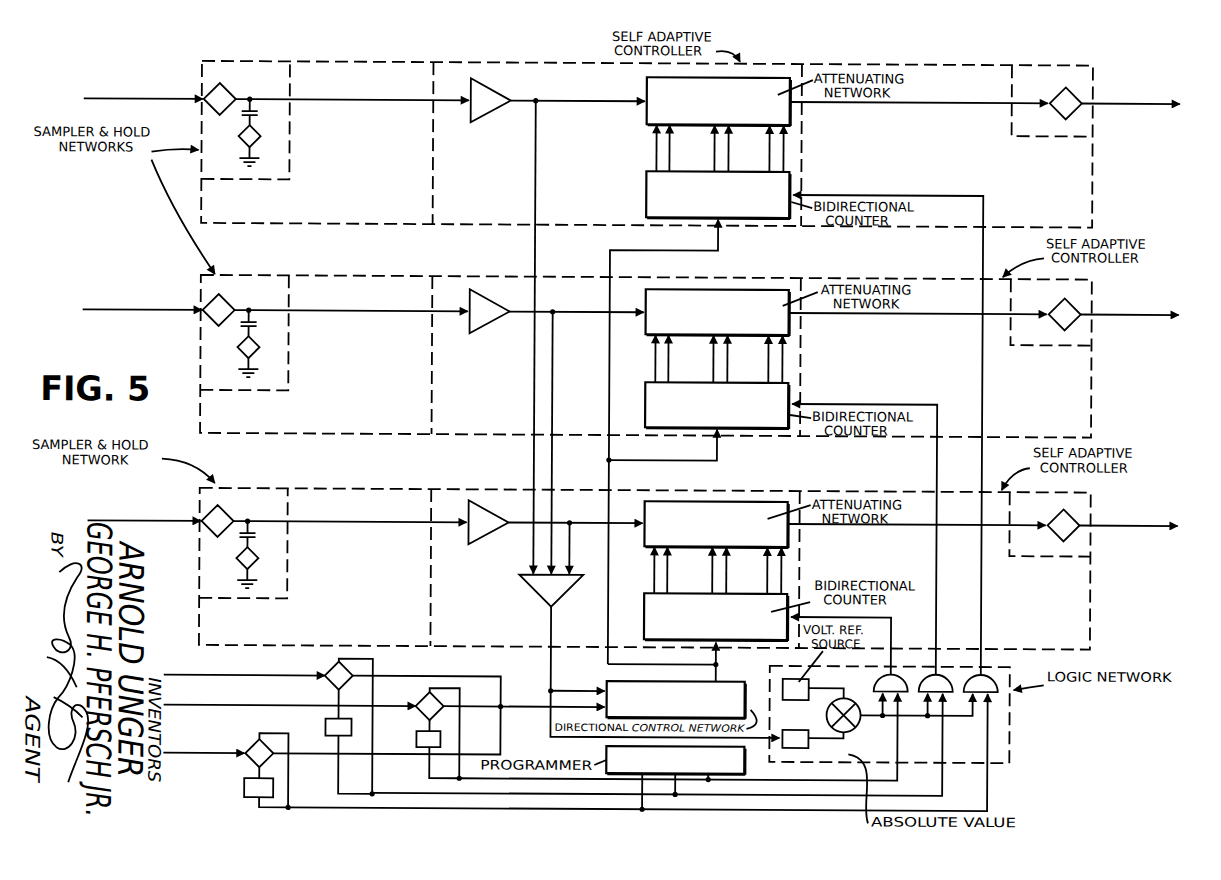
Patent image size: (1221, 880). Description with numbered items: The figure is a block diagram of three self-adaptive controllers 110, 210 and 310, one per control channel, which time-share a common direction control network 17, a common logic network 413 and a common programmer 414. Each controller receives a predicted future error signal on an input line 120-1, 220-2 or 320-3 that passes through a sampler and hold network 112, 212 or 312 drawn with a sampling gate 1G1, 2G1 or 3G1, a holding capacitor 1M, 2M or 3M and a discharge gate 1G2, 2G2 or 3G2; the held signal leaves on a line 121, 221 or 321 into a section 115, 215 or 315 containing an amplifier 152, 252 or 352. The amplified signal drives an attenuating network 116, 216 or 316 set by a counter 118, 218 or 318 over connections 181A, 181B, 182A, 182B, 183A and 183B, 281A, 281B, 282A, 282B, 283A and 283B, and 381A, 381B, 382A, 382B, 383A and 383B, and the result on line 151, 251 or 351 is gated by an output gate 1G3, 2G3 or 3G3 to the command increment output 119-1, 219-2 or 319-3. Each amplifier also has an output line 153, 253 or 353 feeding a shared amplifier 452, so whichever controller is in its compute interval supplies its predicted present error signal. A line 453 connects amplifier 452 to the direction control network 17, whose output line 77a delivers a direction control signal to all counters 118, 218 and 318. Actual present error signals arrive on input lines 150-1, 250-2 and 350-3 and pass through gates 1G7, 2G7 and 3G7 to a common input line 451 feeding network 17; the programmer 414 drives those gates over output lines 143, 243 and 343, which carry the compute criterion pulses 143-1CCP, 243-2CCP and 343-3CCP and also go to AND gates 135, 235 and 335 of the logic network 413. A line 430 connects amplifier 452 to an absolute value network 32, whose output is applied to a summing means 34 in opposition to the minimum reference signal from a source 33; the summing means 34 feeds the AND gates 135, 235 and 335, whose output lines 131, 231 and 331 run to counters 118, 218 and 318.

The self-adaptive controller 110 is at (874, 62).
The sampler and hold network 112 is at (236, 185).
The controller input section 115 is at (429, 150).
The attenuating network 116 is at (733, 118).
The counter 118 is at (733, 212).
The output signal 119-1 is at (1163, 121).
The input line 120-1 is at (120, 99).
The sampler output line 121 is at (328, 99).
The output line 131 is at (876, 193).
The AND gate 135 is at (988, 668).
The programmer output line 143 is at (337, 760).
The compute criterion pulse line 143-1CCP is at (745, 808).
The input line 150-1 is at (256, 676).
The attenuator output line 151 is at (921, 106).
The amplifier 152 is at (491, 121).
The amplifier output line 153 is at (536, 116).
The direction control network 17 is at (737, 709).
The counter output line 181A is at (652, 140).
The counter output line 181B is at (668, 143).
The counter output line 182A is at (712, 160).
The counter output line 182B is at (728, 160).
The counter output line 183A is at (767, 142).
The counter output line 183B is at (783, 143).
The gate 1G1 is at (226, 93).
The gate 1G2 is at (259, 139).
The gate 1G3 is at (1074, 96).
The gate 1G7 is at (330, 670).
The holding capacitor 1M is at (262, 114).
The self-adaptive controller 210 is at (856, 276).
The sampler and hold network 212 is at (236, 396).
The controller input section 215 is at (429, 360).
The attenuating network 216 is at (733, 329).
The counter 218 is at (733, 422).
The output signal 219-2 is at (1163, 332).
The input line 220-2 is at (154, 310).
The sampler output line 221 is at (328, 310).
The output line 231 is at (856, 403).
The AND gate 235 is at (942, 668).
The programmer output line 243 is at (424, 756).
The compute criterion pulse line 243-2CCP is at (745, 793).
The input line 250-2 is at (262, 706).
The attenuator output line 251 is at (918, 317).
The amplifier 252 is at (491, 332).
The amplifier output line 253 is at (556, 318).
The counter output line 281A is at (652, 354).
The counter output line 281B is at (668, 357).
The counter output line 282A is at (712, 374).
The counter output line 282B is at (728, 374).
The counter output line 283A is at (767, 356).
The counter output line 283B is at (783, 357).
The gate 2G1 is at (226, 304).
The gate 2G2 is at (259, 350).
The gate 2G3 is at (1074, 307).
The gate 2G7 is at (423, 700).
The holding capacitor 2M is at (262, 325).
The self-adaptive controller 310 is at (822, 489).
The sampler and hold network 312 is at (236, 604).
The controller input section 315 is at (429, 577).
The attenuating network 316 is at (733, 541).
The counter 318 is at (733, 635).
The output signal 319-3 is at (1163, 543).
The input line 320-3 is at (150, 521).
The sampler output line 321 is at (328, 521).
The output line 331 is at (869, 616).
The AND gate 335 is at (892, 668).
The programmer output line 343 is at (250, 801).
The compute criterion pulse line 343-3CCP is at (745, 778).
The input line 350-3 is at (240, 749).
The attenuator output line 351 is at (899, 528).
The amplifier 352 is at (491, 543).
The amplifier output line 353 is at (571, 529).
The counter output line 381A is at (652, 567).
The counter output line 381B is at (668, 570).
The counter output line 382A is at (712, 586).
The counter output line 382B is at (728, 586).
The counter output line 383A is at (767, 569).
The counter output line 383B is at (783, 570).
The gate 3G1 is at (226, 515).
The gate 3G2 is at (259, 561).
The gate 3G3 is at (1074, 518).
The gate 3G7 is at (250, 761).
The holding capacitor 3M is at (262, 536).
The absolute value network 32 is at (811, 746).
The minimum reference signal source 33 is at (811, 687).
The summing means 34 is at (828, 716).
The logic network 413 is at (1015, 716).
The programmer 414 is at (718, 772).
The input line 430 is at (583, 738).
The common input line 451 is at (526, 711).
The amplifier 452 is at (532, 600).
The line 453 is at (568, 690).
The output line 77a is at (719, 250).